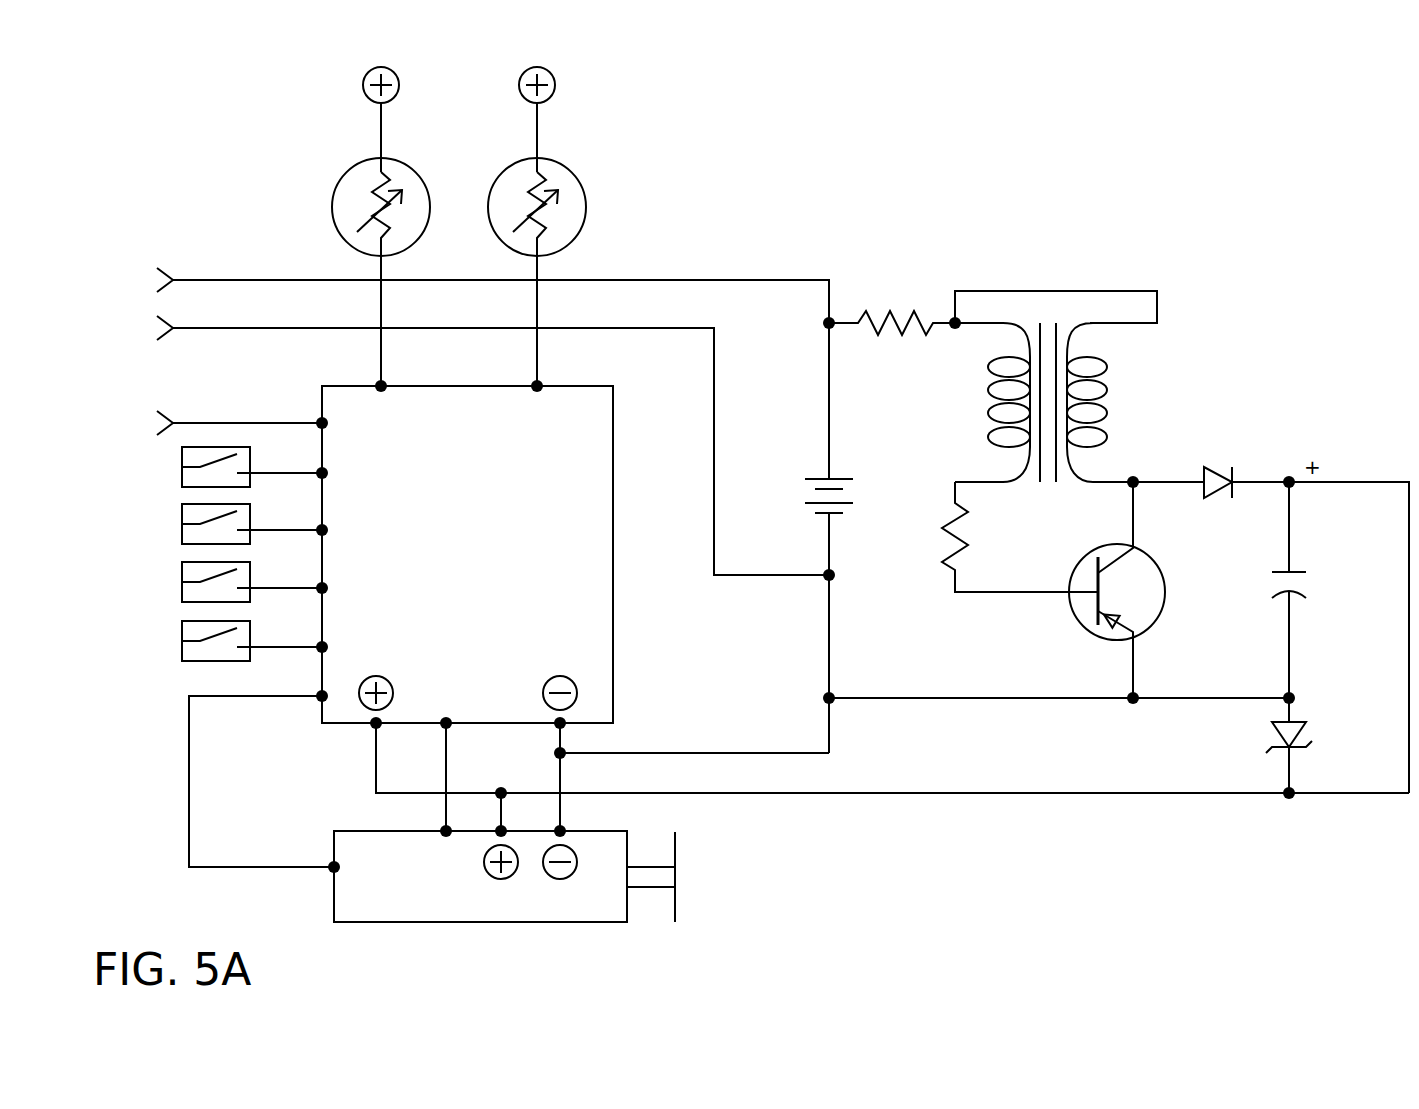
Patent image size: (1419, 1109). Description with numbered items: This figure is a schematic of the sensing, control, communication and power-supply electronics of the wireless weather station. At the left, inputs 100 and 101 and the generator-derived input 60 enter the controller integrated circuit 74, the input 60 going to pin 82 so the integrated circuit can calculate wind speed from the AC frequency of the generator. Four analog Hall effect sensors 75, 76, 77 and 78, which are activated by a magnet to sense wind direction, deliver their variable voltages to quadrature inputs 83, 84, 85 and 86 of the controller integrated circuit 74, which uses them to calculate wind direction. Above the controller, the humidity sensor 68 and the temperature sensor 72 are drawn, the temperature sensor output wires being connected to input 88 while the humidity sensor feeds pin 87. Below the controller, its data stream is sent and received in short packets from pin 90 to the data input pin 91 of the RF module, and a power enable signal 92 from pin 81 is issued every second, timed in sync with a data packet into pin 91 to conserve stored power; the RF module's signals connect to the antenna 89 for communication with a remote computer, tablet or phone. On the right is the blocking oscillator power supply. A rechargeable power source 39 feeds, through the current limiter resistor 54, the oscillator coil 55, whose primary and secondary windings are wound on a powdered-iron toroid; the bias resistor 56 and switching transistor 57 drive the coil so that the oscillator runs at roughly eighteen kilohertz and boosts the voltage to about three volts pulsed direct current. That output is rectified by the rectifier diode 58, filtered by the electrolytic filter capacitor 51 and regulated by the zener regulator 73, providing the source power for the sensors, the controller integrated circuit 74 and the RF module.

The input line 100 is at (473, 373).
The input line 101 is at (473, 445).
The input 60 is at (225, 423).
The humidity sensor 68 is at (343, 173).
The temperature sensor 72 is at (508, 170).
The controller integrated circuit 74 is at (613, 617).
The analog Hall effect sensor 75 is at (182, 468).
The analog Hall effect sensor 76 is at (182, 525).
The analog Hall effect sensor 77 is at (182, 583).
The analog Hall effect sensor 78 is at (182, 642).
The pin 81 is at (432, 774).
The pin 82 is at (310, 413).
The quadrature input 83 is at (282, 463).
The quadrature input 84 is at (282, 520).
The quadrature input 85 is at (282, 578).
The quadrature input 86 is at (282, 637).
The sensor input terminal 87 is at (368, 376).
The input 88 is at (523, 376).
The antenna 89 is at (675, 852).
The pin 90 is at (261, 769).
The data input pin 91 is at (322, 855).
The power enable signal 92 is at (432, 820).
The rechargeable power source 39 is at (828, 478).
The current limiter resistor 54 is at (893, 312).
The oscillator coil 55 is at (1107, 405).
The bias resistor 56 is at (968, 533).
The switching transistor 57 is at (1165, 582).
The rectifier diode 58 is at (1221, 465).
The filter capacitor 51 is at (1307, 582).
The zener regulator 73 is at (1307, 737).